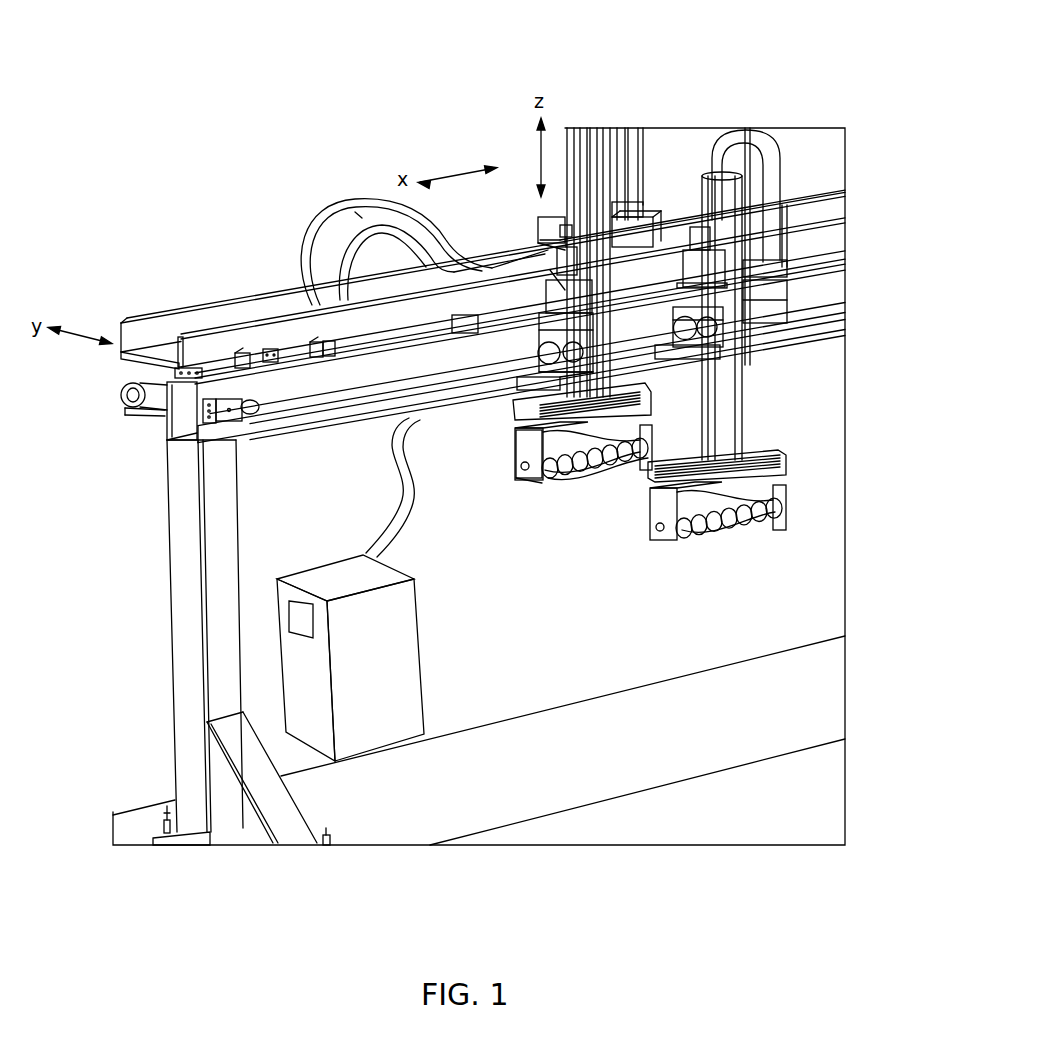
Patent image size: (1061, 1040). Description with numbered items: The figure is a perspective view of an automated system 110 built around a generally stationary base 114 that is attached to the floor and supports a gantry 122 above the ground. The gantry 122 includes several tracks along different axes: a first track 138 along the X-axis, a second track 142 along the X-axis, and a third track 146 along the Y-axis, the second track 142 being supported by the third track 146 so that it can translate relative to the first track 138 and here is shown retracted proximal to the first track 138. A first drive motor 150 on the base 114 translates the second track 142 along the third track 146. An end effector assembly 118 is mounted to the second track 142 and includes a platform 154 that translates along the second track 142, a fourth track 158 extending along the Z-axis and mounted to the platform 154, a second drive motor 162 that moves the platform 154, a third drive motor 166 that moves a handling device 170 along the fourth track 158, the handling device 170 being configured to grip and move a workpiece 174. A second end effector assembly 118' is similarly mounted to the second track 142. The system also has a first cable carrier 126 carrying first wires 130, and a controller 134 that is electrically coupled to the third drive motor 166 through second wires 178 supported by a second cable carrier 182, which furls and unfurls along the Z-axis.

The automated system 110 is at (214, 74).
The base 114 is at (188, 625).
The end effector assembly 118 is at (559, 496).
The second end effector assembly 118' is at (721, 376).
The gantry 122 is at (855, 248).
The first cable carrier 126 is at (320, 214).
The first wires 130 is at (360, 215).
The controller 134 is at (407, 700).
The first track 138 is at (144, 330).
The second track 142 is at (313, 420).
The third track 146 is at (243, 353).
The first drive motor 150 is at (155, 398).
The platform 154 is at (532, 384).
The fourth track 158 is at (607, 147).
The second drive motor 162 is at (568, 288).
The third drive motor 166 is at (660, 197).
The handling device 170 is at (523, 456).
The workpiece 174 is at (590, 472).
The second wires 178 is at (635, 143).
The second cable carrier 182 is at (647, 153).